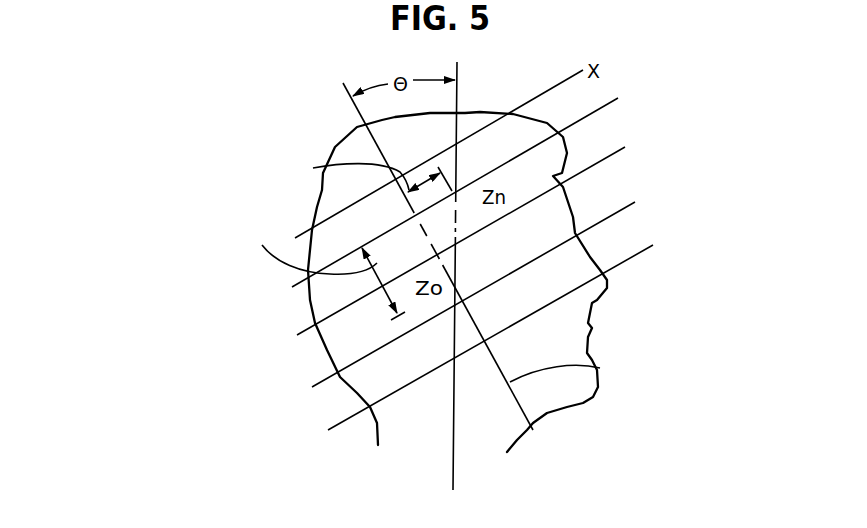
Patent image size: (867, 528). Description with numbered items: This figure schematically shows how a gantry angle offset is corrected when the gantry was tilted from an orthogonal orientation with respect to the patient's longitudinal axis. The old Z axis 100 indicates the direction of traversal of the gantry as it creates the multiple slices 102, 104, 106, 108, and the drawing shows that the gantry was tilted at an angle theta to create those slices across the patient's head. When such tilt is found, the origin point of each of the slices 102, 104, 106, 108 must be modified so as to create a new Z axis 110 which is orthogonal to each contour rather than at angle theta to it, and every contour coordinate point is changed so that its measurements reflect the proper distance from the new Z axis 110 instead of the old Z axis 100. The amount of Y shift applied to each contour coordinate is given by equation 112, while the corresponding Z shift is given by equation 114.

The Z axis 100 is at (453, 476).
The slice 102 is at (610, 267).
The slice 104 is at (618, 210).
The slice 106 is at (610, 155).
The slice 108 is at (610, 105).
The new Z axis 110 is at (600, 368).
The equation 112 is at (189, 149).
The equation 114 is at (154, 251).